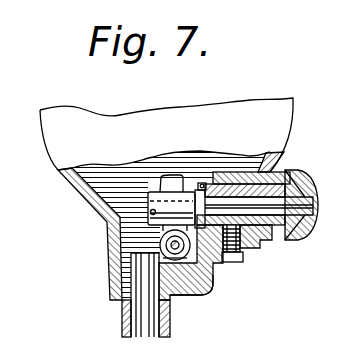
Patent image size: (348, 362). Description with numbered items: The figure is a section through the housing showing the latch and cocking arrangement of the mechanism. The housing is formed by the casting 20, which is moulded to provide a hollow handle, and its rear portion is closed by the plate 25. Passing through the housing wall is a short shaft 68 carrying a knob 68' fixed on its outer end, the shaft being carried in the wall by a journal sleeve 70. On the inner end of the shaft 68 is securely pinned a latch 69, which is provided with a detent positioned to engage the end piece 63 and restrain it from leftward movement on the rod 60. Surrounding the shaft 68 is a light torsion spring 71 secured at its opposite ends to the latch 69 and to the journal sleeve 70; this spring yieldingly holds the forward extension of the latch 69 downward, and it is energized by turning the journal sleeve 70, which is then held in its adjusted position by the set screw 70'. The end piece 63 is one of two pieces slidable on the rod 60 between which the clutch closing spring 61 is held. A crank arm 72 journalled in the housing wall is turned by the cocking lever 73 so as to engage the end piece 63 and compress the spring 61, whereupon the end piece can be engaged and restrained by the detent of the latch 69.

The plate 25 is at (144, 123).
The casting 20 is at (82, 193).
The latch 69 is at (173, 178).
The light torsion spring 71 is at (201, 183).
The knob 68' is at (274, 172).
The short shaft 68 is at (314, 213).
The journal sleeve 70 is at (261, 236).
The set screw 70' is at (253, 254).
The rod 60 is at (211, 284).
The clutch closing spring 61 is at (178, 259).
The end piece 63 is at (204, 294).
The crank arm 72 is at (143, 332).
The cocking lever 73 is at (122, 318).